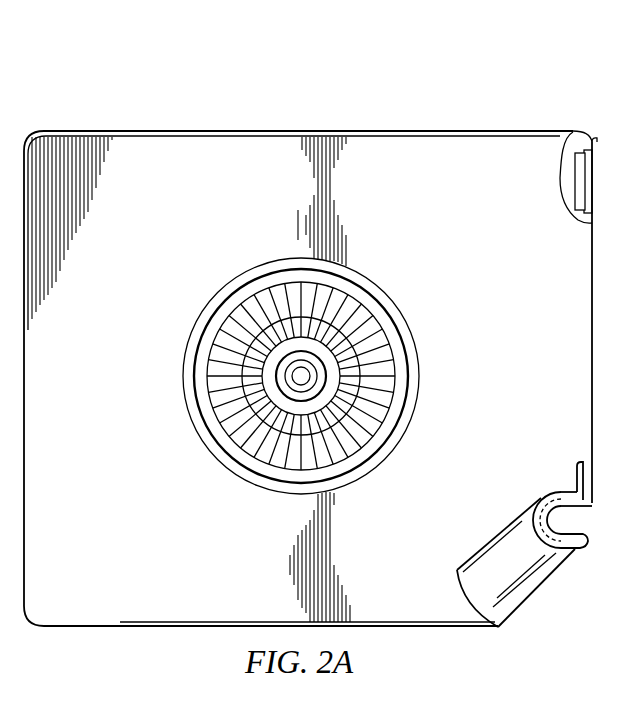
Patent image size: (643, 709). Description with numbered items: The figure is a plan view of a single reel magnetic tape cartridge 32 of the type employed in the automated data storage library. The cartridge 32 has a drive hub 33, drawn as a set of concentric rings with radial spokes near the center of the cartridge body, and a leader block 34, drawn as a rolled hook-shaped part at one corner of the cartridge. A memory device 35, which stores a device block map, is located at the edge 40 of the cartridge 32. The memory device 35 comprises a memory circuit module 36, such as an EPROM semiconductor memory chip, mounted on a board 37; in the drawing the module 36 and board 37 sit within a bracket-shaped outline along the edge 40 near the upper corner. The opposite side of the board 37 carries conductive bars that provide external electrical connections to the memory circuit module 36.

The single reel magnetic tape cartridge 32 is at (321, 116).
The drive hub 33 is at (252, 447).
The leader block 34 is at (577, 547).
The memory device 35 is at (568, 178).
The memory circuit module 36 is at (578, 152).
The board 37 is at (595, 140).
The edge 40 is at (593, 260).